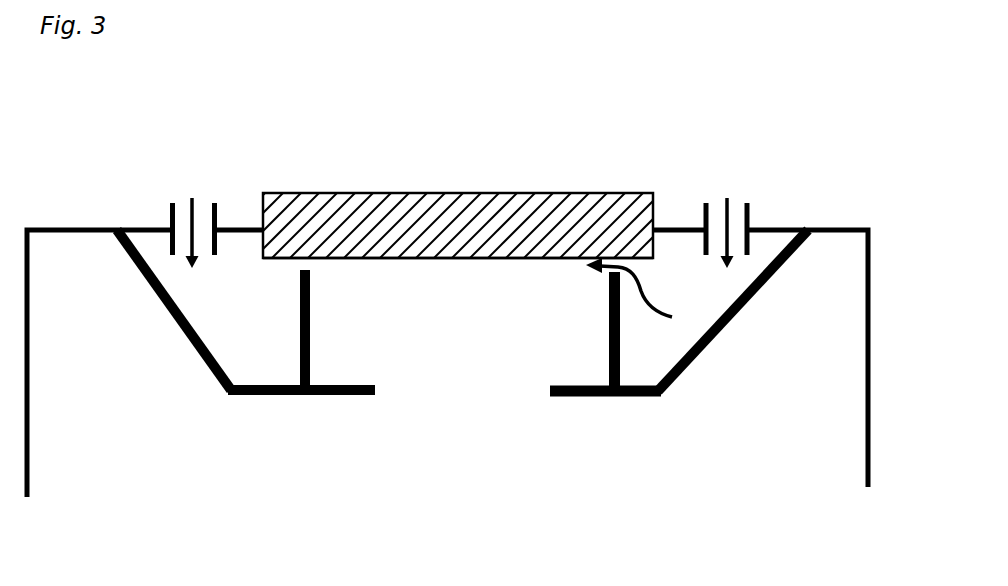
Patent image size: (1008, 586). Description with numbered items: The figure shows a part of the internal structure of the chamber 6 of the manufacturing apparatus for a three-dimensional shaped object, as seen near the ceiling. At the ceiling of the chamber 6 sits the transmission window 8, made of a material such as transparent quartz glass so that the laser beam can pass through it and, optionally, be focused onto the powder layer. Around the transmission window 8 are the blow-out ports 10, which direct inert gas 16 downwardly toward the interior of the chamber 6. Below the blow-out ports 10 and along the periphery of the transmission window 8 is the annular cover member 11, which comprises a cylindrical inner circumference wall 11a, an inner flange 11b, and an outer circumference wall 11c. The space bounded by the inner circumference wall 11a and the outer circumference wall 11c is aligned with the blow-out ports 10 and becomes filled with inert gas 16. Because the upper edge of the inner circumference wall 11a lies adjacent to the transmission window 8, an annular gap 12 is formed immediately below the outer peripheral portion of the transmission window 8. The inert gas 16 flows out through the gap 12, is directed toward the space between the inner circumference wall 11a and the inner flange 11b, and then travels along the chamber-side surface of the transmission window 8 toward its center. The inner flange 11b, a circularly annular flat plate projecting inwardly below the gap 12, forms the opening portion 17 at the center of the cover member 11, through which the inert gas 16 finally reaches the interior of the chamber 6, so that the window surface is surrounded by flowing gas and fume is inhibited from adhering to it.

The chamber 6 is at (872, 300).
The transmission window 8 is at (560, 193).
The blow-out port 10 is at (203, 213).
The cover member 11 is at (246, 363).
The inner circumference wall 11a is at (310, 368).
The inner flange 11b is at (350, 398).
The outer circumference wall 11c is at (173, 322).
The gap 12 is at (303, 262).
The inert gas 16 is at (729, 212).
The opening portion 17 is at (485, 375).